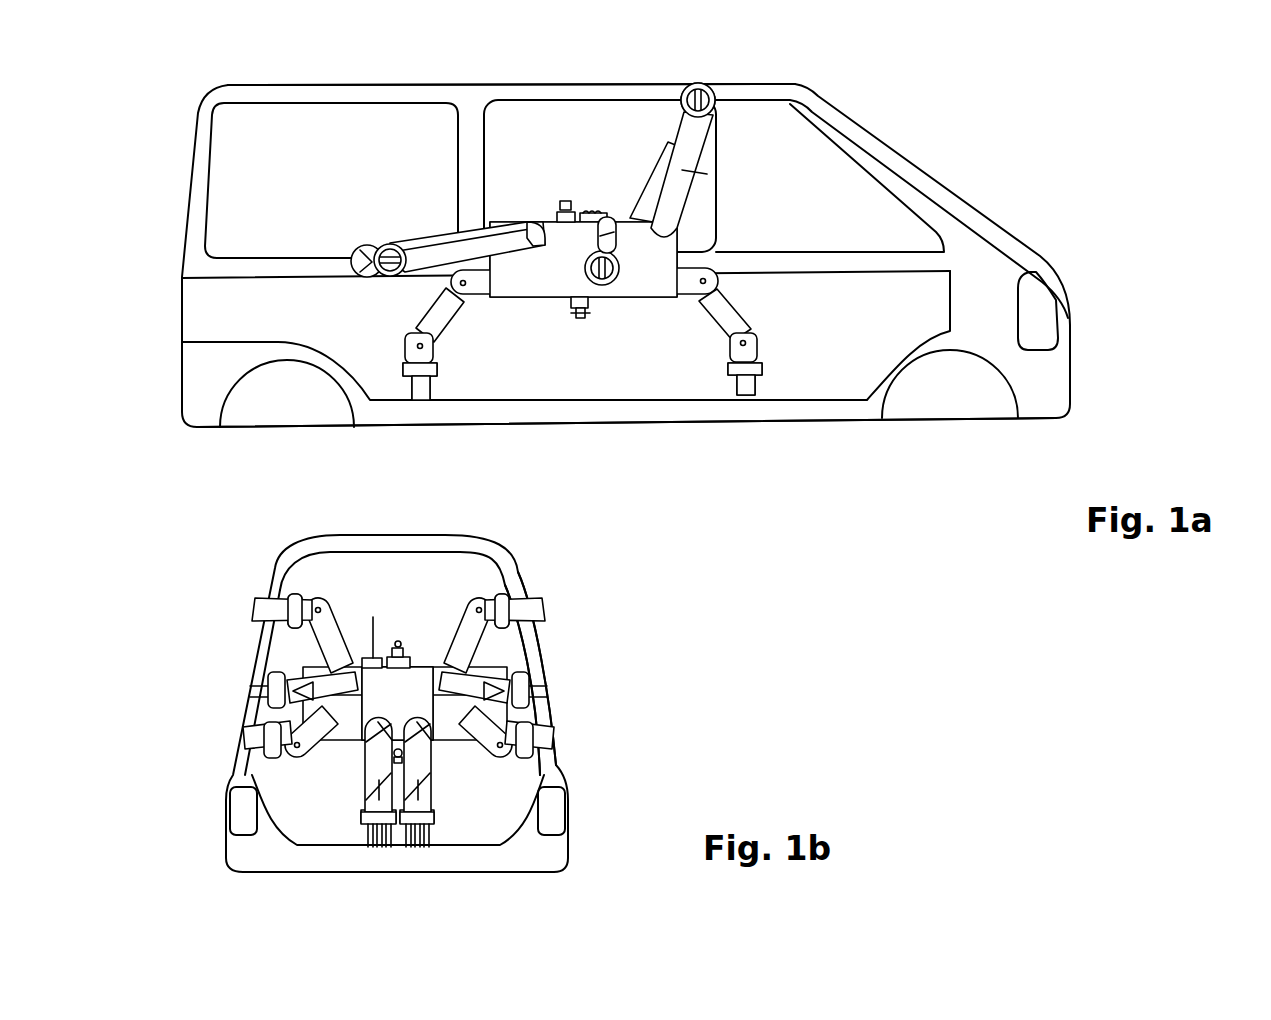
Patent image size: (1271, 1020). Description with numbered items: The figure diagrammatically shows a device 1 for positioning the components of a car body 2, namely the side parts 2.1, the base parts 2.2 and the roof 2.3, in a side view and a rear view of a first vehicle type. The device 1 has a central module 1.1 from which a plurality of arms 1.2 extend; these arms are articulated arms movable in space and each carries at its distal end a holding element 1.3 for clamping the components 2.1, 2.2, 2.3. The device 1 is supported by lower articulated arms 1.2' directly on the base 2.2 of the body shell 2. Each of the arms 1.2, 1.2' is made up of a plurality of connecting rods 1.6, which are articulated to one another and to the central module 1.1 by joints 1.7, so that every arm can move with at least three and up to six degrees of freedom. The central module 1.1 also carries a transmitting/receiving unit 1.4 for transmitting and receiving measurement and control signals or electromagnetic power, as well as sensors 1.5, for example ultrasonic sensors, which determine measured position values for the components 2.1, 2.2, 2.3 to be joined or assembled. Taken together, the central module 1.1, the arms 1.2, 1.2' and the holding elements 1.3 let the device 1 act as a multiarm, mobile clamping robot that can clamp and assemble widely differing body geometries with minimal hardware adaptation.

In FIG. 1A, the device 1 is at (640, 322).
In FIG. 1B, the device 1 is at (428, 610).
In FIG. 1A, the central module 1.1 is at (562, 223).
In FIG. 1B, the central module 1.1 is at (350, 715).
In FIG. 1A, the arms 1.2 is at (590, 148).
In FIG. 1B, the arms 1.2 is at (317, 677).
In FIG. 1A, the lower articulated arms 1.2' is at (696, 419).
In FIG. 1B, the lower articulated arms 1.2' is at (498, 805).
In FIG. 1A, the holding element 1.3 is at (366, 245).
In FIG. 1B, the holding element 1.3 is at (272, 605).
In FIG. 1A, the transmitting/receiving unit 1.4 is at (597, 173).
In FIG. 1B, the transmitting/receiving unit 1.4 is at (370, 637).
In FIG. 1A, the sensors 1.5 is at (577, 320).
In FIG. 1B, the sensors 1.5 is at (405, 655).
In FIG. 1A, the connecting rods 1.6 is at (737, 298).
In FIG. 1A, the joints 1.7 is at (757, 337).
In FIG. 1A, the car body 2 is at (1020, 177).
In FIG. 1B, the car body 2 is at (627, 767).
In FIG. 1A, the side parts 2.1 is at (292, 277).
In FIG. 1B, the side parts 2.1 is at (542, 662).
In FIG. 1A, the base parts 2.2 is at (848, 425).
In FIG. 1B, the base parts 2.2 is at (290, 855).
In FIG. 1A, the roof 2.3 is at (560, 82).
In FIG. 1B, the roof 2.3 is at (300, 540).